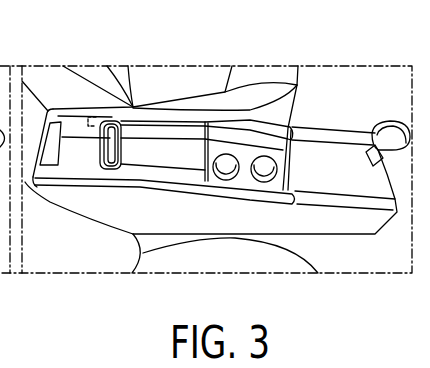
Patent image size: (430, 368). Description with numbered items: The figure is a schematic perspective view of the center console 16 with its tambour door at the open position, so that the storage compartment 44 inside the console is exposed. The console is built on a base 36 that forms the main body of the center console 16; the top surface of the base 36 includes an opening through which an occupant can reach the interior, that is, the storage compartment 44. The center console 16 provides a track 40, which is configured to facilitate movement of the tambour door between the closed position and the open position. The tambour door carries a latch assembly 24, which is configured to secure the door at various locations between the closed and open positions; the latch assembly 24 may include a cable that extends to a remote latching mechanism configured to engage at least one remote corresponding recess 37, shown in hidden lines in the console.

The center console 16 is at (347, 110).
The latch assembly 24 is at (99, 147).
The base 36 is at (353, 228).
The remote corresponding recess 37 is at (82, 124).
The track 40 is at (143, 124).
The storage compartment 44 is at (155, 157).